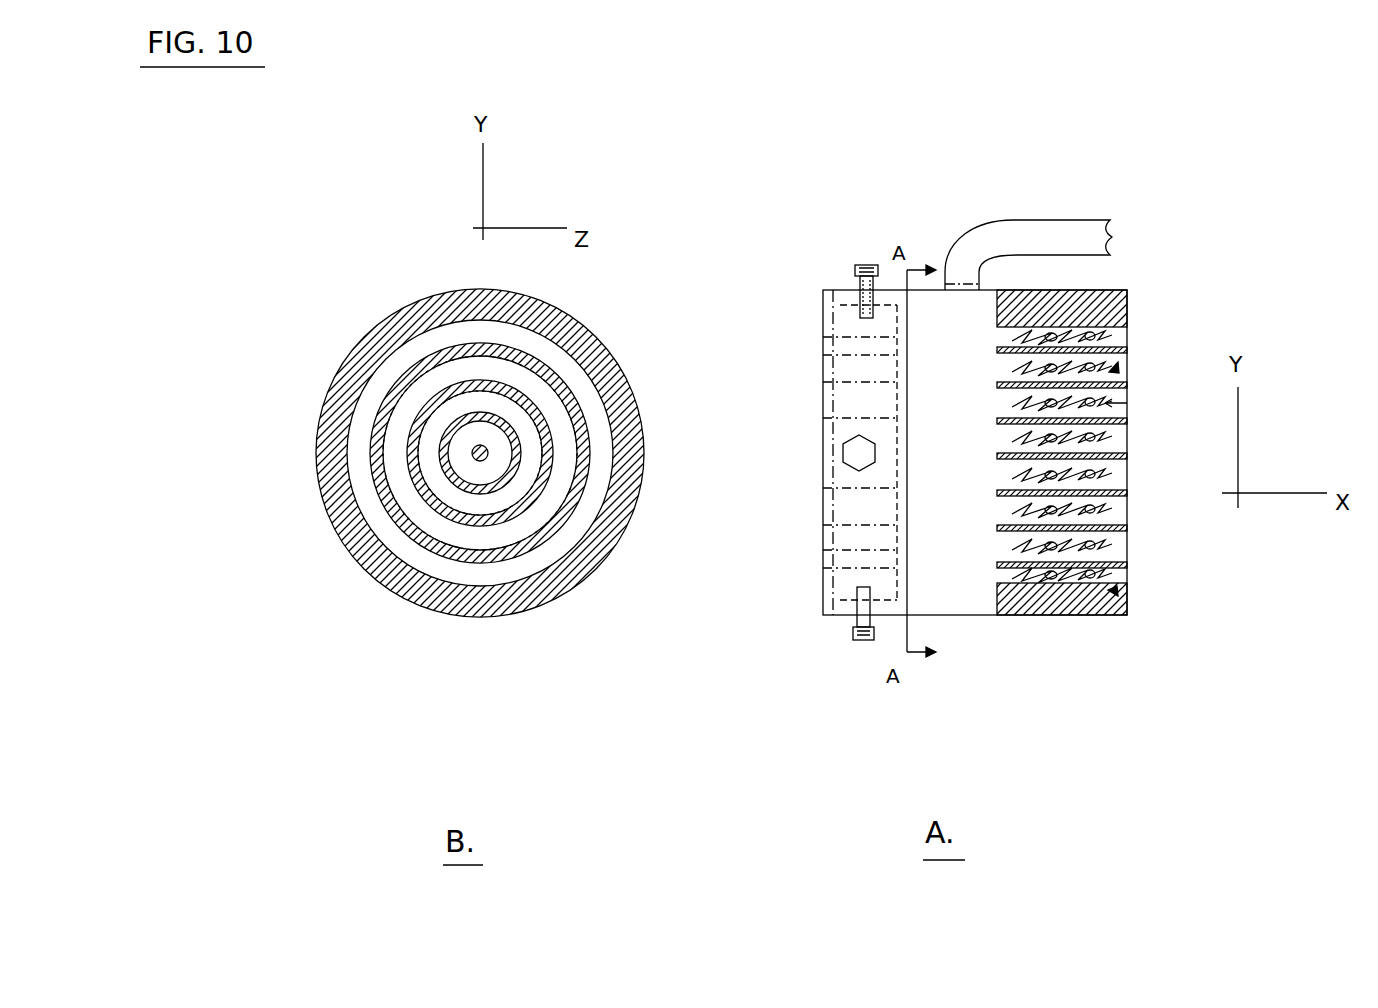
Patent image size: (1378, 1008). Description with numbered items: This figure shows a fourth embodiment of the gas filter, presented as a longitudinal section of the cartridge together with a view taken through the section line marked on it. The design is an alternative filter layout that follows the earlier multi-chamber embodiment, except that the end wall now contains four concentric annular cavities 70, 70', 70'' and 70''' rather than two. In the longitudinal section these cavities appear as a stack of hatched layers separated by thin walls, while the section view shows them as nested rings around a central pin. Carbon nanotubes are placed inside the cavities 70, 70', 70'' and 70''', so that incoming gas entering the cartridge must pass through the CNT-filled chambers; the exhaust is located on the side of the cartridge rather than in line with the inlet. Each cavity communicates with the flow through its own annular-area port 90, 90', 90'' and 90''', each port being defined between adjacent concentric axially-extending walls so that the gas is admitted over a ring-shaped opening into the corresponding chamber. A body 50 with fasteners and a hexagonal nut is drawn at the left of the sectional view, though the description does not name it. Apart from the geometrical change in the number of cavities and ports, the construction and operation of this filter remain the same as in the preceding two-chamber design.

The annular cavity 70 is at (431, 418).
The annular cavity 70' is at (406, 440).
The annular cavity 70'' is at (379, 453).
The annular cavity 70''' is at (363, 501).
The mounting body 50 is at (855, 585).
The port 90 is at (1042, 675).
The port 90' is at (1053, 657).
The port 90'' is at (1086, 614).
The port 90''' is at (1133, 560).